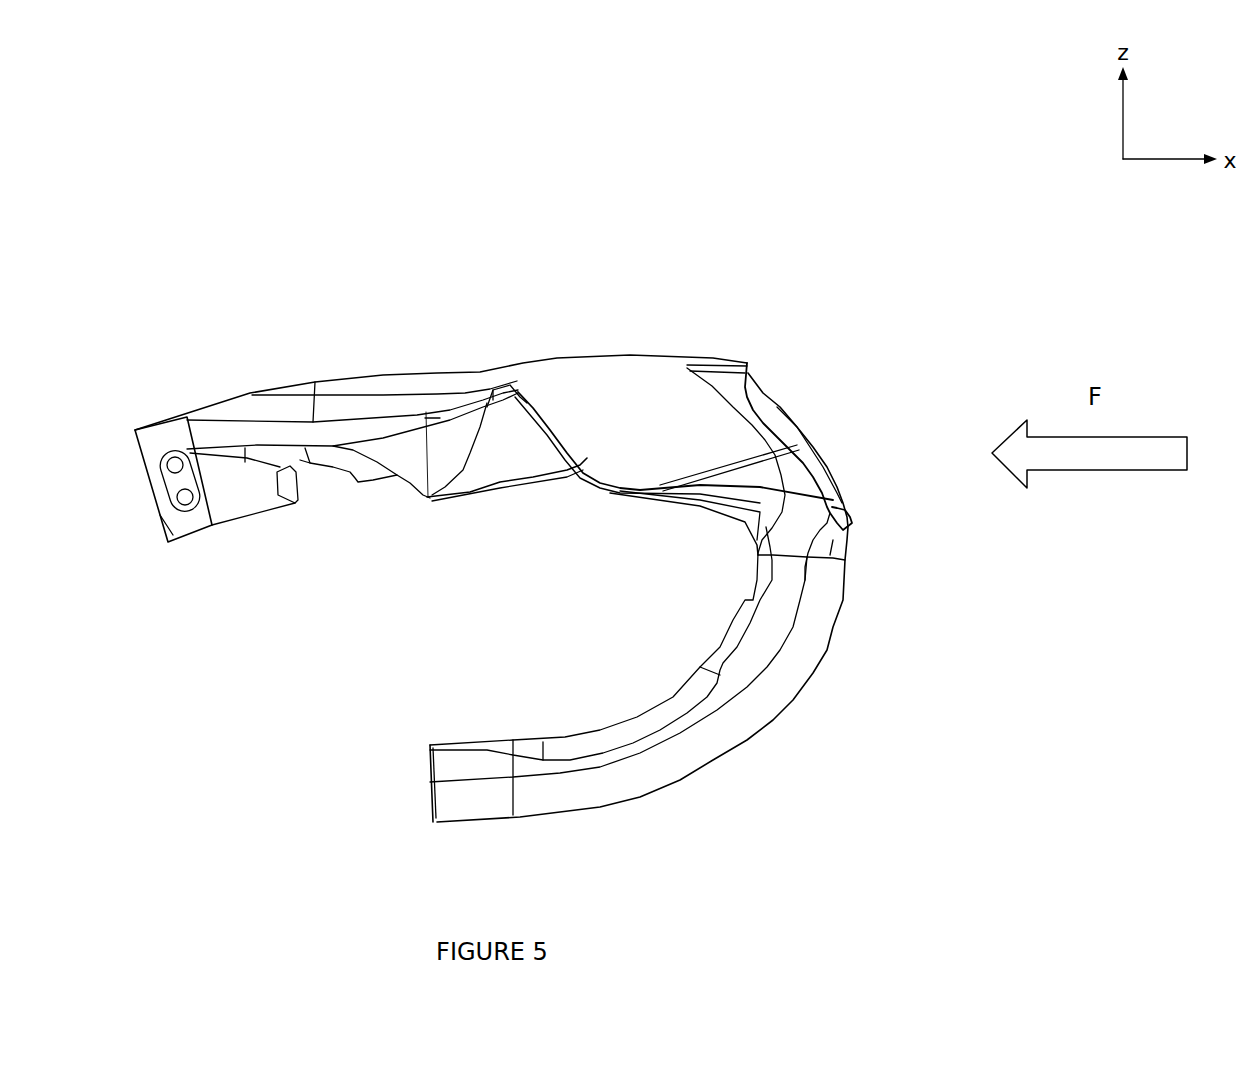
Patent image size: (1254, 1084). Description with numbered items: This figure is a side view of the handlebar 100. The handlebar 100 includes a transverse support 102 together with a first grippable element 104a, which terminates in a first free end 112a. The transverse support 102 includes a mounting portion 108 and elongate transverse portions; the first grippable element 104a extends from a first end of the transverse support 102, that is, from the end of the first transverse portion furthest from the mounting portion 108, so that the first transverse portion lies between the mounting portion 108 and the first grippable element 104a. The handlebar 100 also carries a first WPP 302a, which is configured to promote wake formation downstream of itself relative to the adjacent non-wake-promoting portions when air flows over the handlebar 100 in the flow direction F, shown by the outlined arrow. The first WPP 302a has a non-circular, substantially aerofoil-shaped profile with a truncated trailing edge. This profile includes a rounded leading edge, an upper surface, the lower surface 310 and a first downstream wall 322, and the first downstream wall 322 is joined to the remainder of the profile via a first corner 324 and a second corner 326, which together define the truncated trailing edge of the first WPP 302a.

The handlebar 100 is at (571, 502).
The transverse support 102 is at (484, 450).
The first grippable element 104a is at (889, 619).
The mounting portion 108 is at (326, 519).
The first free end 112a is at (390, 802).
The first WPP 302a is at (637, 613).
The lower surface 310 is at (507, 524).
The first downstream wall 322 is at (372, 476).
The first corner 324 is at (493, 355).
The second corner 326 is at (435, 497).